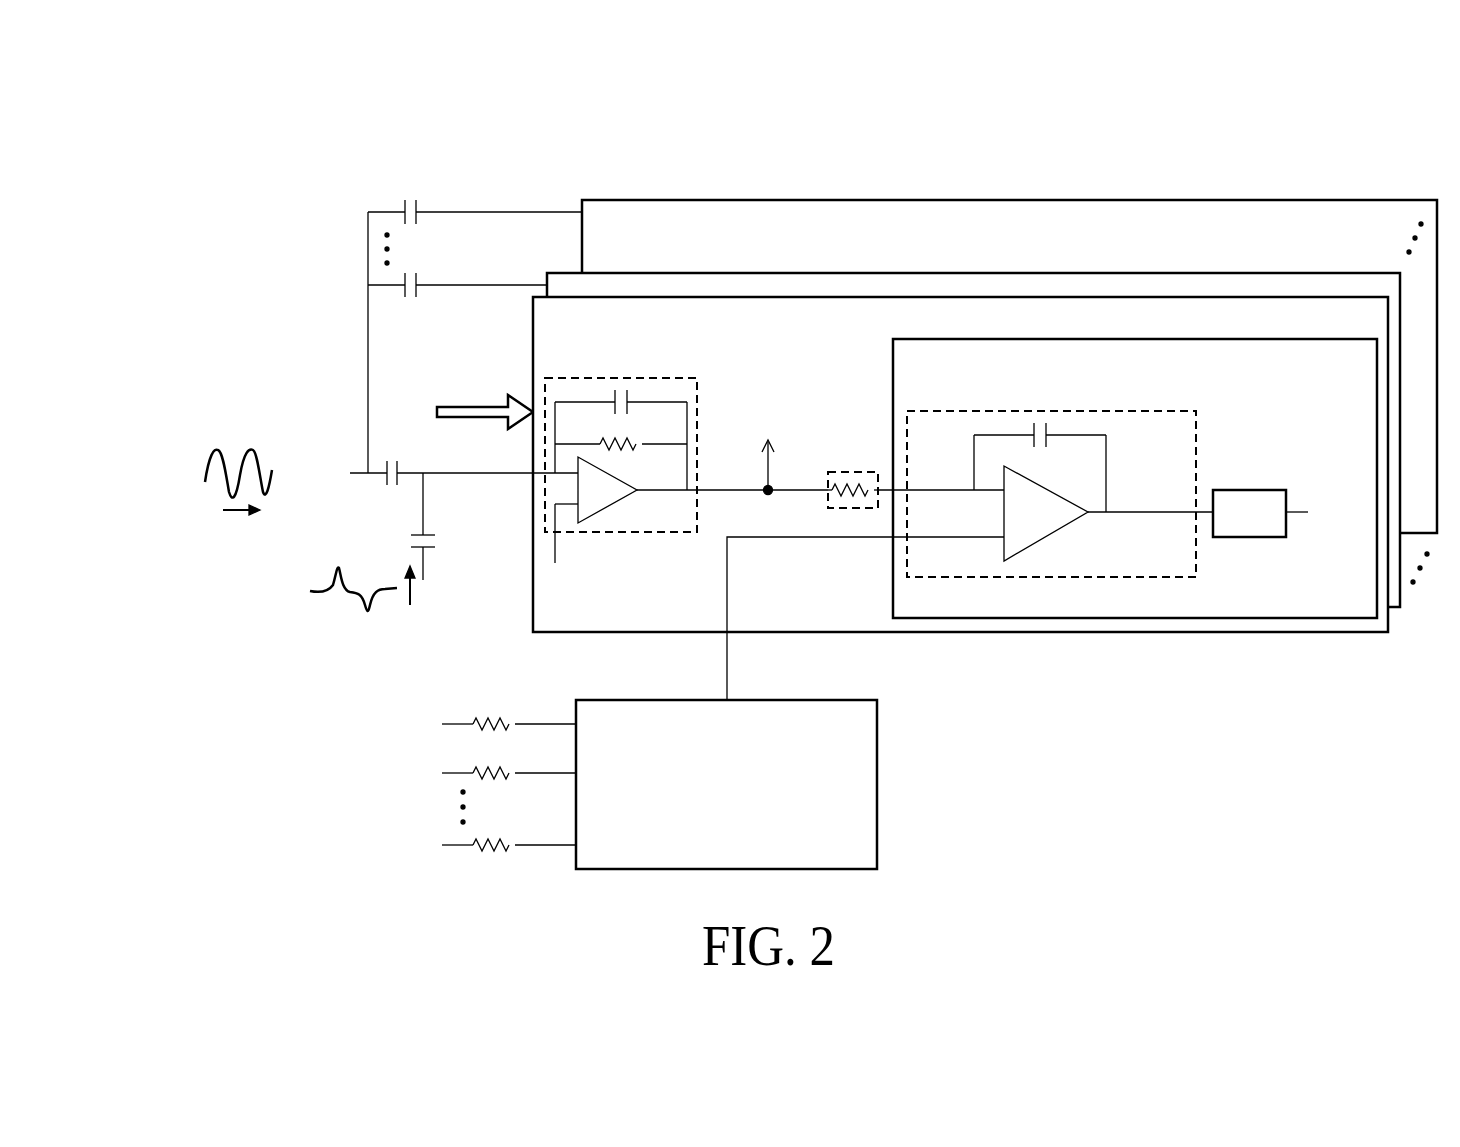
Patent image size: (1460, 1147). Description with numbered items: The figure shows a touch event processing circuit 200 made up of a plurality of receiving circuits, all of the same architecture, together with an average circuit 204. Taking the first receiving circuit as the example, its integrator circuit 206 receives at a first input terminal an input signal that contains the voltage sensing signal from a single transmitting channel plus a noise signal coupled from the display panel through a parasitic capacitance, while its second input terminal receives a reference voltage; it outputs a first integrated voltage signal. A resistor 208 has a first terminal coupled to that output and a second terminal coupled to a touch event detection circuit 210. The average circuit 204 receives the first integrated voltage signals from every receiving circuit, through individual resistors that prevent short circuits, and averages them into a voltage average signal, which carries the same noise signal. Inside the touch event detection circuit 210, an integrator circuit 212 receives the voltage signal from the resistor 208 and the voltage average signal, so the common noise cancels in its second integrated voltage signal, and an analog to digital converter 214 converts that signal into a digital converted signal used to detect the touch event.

The touch event processing circuit 200 is at (1062, 142).
The average circuit 204 is at (880, 783).
The integrator circuit 206 is at (620, 378).
The resistor 208 is at (860, 472).
The touch event detection circuit 210 is at (1133, 339).
The integrator circuit 212 is at (1197, 449).
The analog to digital converter (ADC) 214 is at (1250, 538).